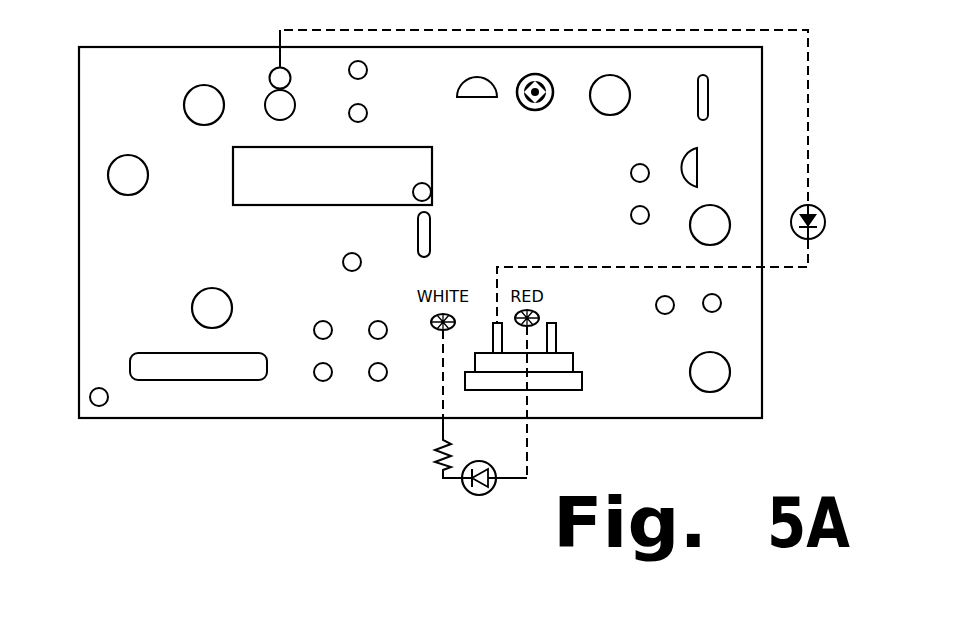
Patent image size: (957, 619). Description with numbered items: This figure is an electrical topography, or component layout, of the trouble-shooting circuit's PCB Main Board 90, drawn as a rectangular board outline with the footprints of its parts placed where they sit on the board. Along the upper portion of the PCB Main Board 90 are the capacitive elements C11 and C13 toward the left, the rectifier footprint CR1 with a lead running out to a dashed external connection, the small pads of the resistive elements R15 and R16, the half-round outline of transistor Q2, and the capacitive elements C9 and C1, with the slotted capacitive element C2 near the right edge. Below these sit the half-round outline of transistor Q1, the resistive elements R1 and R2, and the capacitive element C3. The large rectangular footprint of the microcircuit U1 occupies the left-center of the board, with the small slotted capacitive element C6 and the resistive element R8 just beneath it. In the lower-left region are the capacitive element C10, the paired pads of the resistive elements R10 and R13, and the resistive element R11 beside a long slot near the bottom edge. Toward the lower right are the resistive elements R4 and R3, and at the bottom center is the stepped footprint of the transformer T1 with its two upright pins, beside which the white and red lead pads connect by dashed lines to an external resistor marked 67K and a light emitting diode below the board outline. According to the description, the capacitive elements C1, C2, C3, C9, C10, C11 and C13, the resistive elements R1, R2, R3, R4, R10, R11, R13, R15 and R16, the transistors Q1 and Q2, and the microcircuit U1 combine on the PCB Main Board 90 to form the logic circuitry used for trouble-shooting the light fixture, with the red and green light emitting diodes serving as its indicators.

The PCB Main Board 90 is at (92, 245).
The rectifier CR1 is at (295, 94).
The capacitive element C11 is at (204, 94).
The capacitive element C13 is at (128, 164).
The resistive element R15 is at (382, 71).
The resistive element R16 is at (386, 114).
The transistor Q2 is at (477, 101).
The capacitive element C9 is at (549, 83).
The capacitive element C1 is at (620, 86).
The capacitive element C2 is at (717, 97).
The transistor Q1 is at (713, 161).
The resistive element R1 is at (624, 174).
The resistive element R2 is at (624, 216).
The capacitive element C3 is at (697, 232).
The microcircuit U1 is at (332, 176).
The capacitor C6 is at (438, 234).
The resistor R8 is at (351, 252).
The capacitive element C10 is at (212, 297).
The resistive element R10 is at (334, 321).
The resistive element R13 is at (334, 386).
The resistive element R11 is at (117, 400).
The resistive element R4 is at (663, 296).
The resistive element R3 is at (722, 294).
The transformer T1 is at (523, 370).
The 67K ohm resistor 67K is at (426, 448).